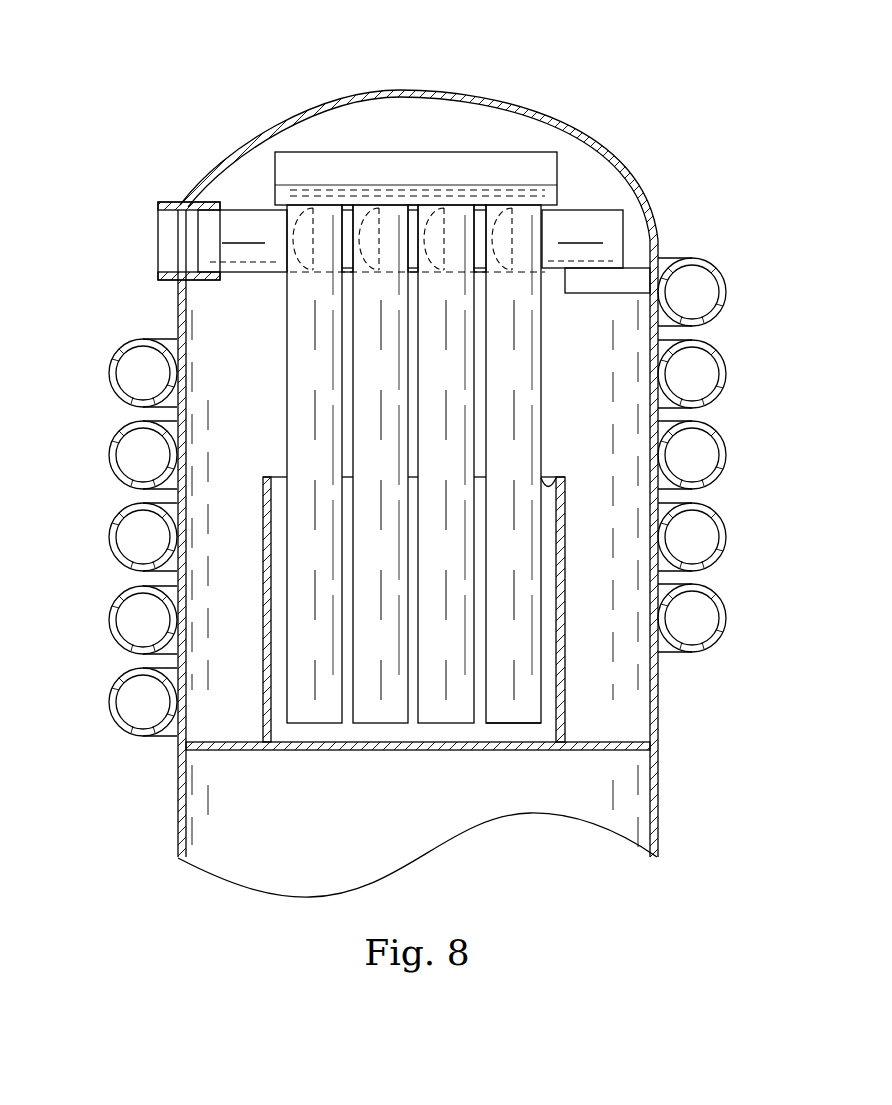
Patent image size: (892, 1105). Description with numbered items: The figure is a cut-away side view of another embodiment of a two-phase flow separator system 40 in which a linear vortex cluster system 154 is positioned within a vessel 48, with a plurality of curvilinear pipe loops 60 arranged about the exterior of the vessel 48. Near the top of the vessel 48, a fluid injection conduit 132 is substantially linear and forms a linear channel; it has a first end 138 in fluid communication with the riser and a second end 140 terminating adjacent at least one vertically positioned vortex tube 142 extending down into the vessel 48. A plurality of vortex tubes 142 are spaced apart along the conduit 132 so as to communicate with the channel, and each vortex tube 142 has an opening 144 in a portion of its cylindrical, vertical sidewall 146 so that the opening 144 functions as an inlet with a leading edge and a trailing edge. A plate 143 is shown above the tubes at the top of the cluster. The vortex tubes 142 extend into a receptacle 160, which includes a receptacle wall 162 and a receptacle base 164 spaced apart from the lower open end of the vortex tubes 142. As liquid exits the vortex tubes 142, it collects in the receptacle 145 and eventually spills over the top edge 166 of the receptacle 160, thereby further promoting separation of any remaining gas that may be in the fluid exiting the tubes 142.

The two-phase flow separator system 40 is at (231, 70).
The vessel 48 is at (603, 134).
The linear vortex cluster system 154 is at (319, 134).
The top plate 143 is at (520, 200).
The opening 144 is at (378, 222).
The fluid injection conduit 132 is at (258, 208).
The first end 138 is at (232, 280).
The cylindrical vertical sidewall 146 is at (545, 225).
The second end 140 is at (543, 270).
The vortex tube 142 is at (353, 398).
The receptacle 145 is at (545, 698).
The receptacle 160 is at (276, 474).
The receptacle wall 162 is at (565, 600).
The top edge 166 is at (563, 488).
The receptacle base 164 is at (287, 752).
The curvilinear pipe loops 60 is at (112, 352).